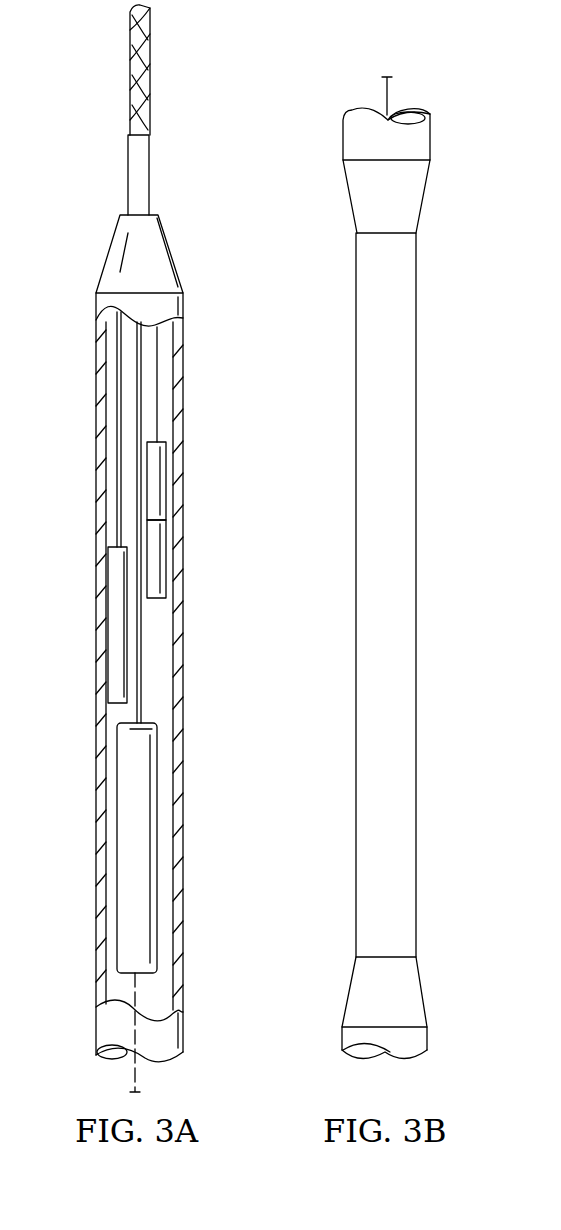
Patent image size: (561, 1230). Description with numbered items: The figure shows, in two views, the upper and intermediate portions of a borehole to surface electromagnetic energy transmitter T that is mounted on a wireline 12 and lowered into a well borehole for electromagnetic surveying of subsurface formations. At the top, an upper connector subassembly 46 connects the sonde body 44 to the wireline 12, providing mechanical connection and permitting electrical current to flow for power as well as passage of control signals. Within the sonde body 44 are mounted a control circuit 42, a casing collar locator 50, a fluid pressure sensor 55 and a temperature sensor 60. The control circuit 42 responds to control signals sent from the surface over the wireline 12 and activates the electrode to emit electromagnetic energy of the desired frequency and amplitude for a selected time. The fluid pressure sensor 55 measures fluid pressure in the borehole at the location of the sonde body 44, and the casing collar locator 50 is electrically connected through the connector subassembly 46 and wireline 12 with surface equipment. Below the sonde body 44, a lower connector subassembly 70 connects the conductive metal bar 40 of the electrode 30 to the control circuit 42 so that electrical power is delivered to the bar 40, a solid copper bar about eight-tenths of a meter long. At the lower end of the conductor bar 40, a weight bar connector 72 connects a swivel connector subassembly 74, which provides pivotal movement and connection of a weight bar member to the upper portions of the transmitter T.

In FIG. 3A, the wireline 12 is at (128, 80).
In FIG. 3A, the upper connector subassembly 46 is at (106, 261).
In FIG. 3A, the sonde body 44 is at (96, 441).
In FIG. 3B, the sonde body 44 is at (343, 139).
In FIG. 3A, the fluid pressure sensor 55 is at (157, 475).
In FIG. 3A, the temperature sensor 60 is at (157, 568).
In FIG. 3A, the casing collar locator 50 is at (117, 628).
In FIG. 3A, the control circuit 42 is at (128, 898).
In FIG. 3B, the electrode 30 is at (387, 571).
In FIG. 3B, the conductive metal bar 40 is at (360, 412).
In FIG. 3B, the lower connector subassembly 70 is at (425, 195).
In FIG. 3B, the weight bar connector 72 is at (347, 992).
In FIG. 3B, the swivel connector subassembly 74 is at (428, 1040).
In FIG. 3B, the electromagnetic energy transmitter T is at (430, 98).